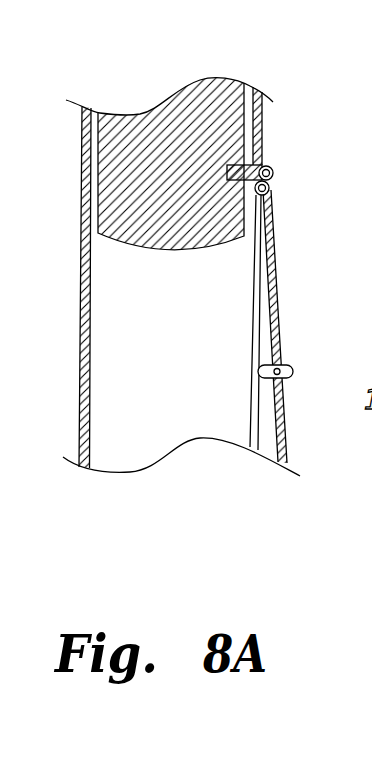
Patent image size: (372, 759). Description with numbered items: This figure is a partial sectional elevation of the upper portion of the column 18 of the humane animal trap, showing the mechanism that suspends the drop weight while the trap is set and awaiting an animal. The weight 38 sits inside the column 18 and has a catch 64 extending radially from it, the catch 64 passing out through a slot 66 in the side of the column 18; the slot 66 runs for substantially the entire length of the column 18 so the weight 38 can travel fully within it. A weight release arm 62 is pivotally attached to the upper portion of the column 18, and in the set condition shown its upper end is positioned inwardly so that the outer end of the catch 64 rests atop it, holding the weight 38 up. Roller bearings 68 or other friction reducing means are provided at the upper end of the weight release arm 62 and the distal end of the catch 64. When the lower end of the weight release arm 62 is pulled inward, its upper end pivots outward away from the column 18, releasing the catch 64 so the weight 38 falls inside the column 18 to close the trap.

The column 18 is at (78, 413).
The weight 38 is at (146, 108).
The weight release arm 62 is at (279, 292).
The catch 64 is at (268, 129).
The slot 66 is at (254, 310).
The roller bearings 68 is at (274, 162).